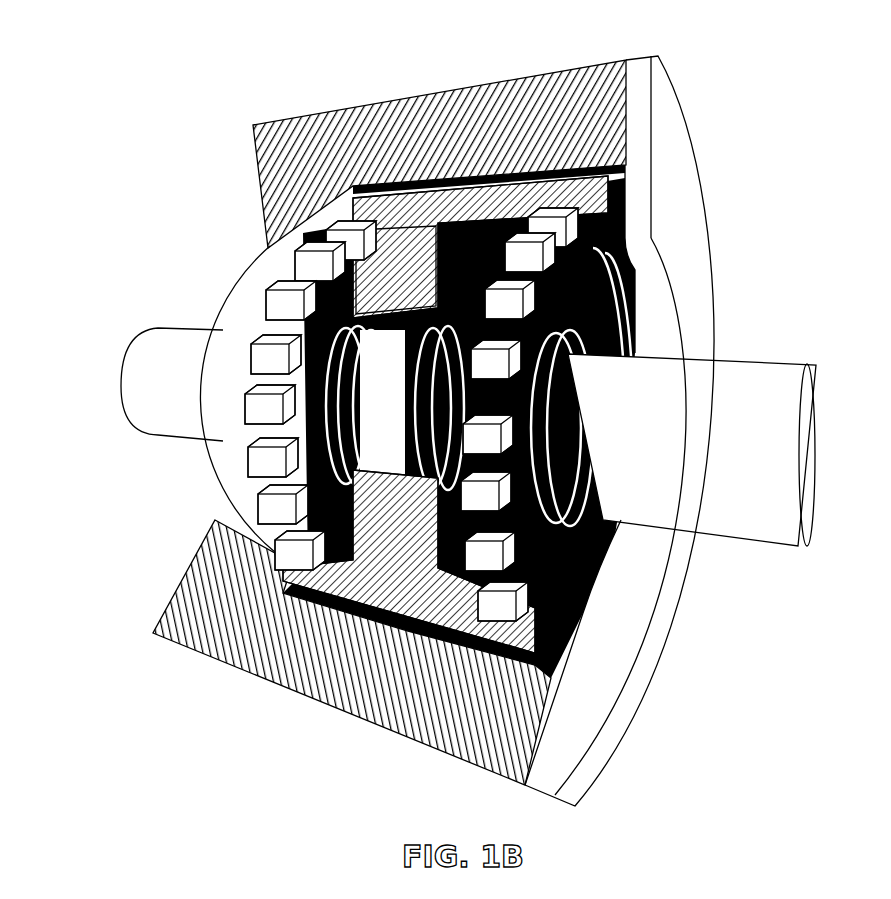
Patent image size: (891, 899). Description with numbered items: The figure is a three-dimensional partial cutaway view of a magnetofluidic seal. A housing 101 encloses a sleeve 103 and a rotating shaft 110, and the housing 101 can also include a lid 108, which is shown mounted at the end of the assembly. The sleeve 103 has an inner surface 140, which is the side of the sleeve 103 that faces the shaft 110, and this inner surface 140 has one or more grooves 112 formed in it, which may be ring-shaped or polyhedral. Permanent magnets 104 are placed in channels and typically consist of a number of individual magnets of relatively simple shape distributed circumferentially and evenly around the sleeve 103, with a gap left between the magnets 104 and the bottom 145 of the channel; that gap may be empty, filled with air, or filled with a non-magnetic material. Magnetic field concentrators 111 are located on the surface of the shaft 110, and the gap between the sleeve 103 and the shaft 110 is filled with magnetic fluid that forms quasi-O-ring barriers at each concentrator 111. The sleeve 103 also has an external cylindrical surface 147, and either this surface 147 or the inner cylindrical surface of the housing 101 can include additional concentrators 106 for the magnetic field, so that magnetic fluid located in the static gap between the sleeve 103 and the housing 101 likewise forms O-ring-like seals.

The housing 101 is at (247, 158).
The sleeve 103 is at (365, 635).
The permanent magnets 104 is at (258, 456).
The concentrators 106 is at (598, 214).
The lid 108 is at (668, 150).
The rotating shaft 110 is at (757, 367).
The magnetic field concentrators 111 is at (332, 352).
The grooves 112 is at (578, 173).
The inner surface 140 is at (442, 500).
The bottom 145 is at (405, 292).
The external cylindrical surface 147 is at (598, 186).